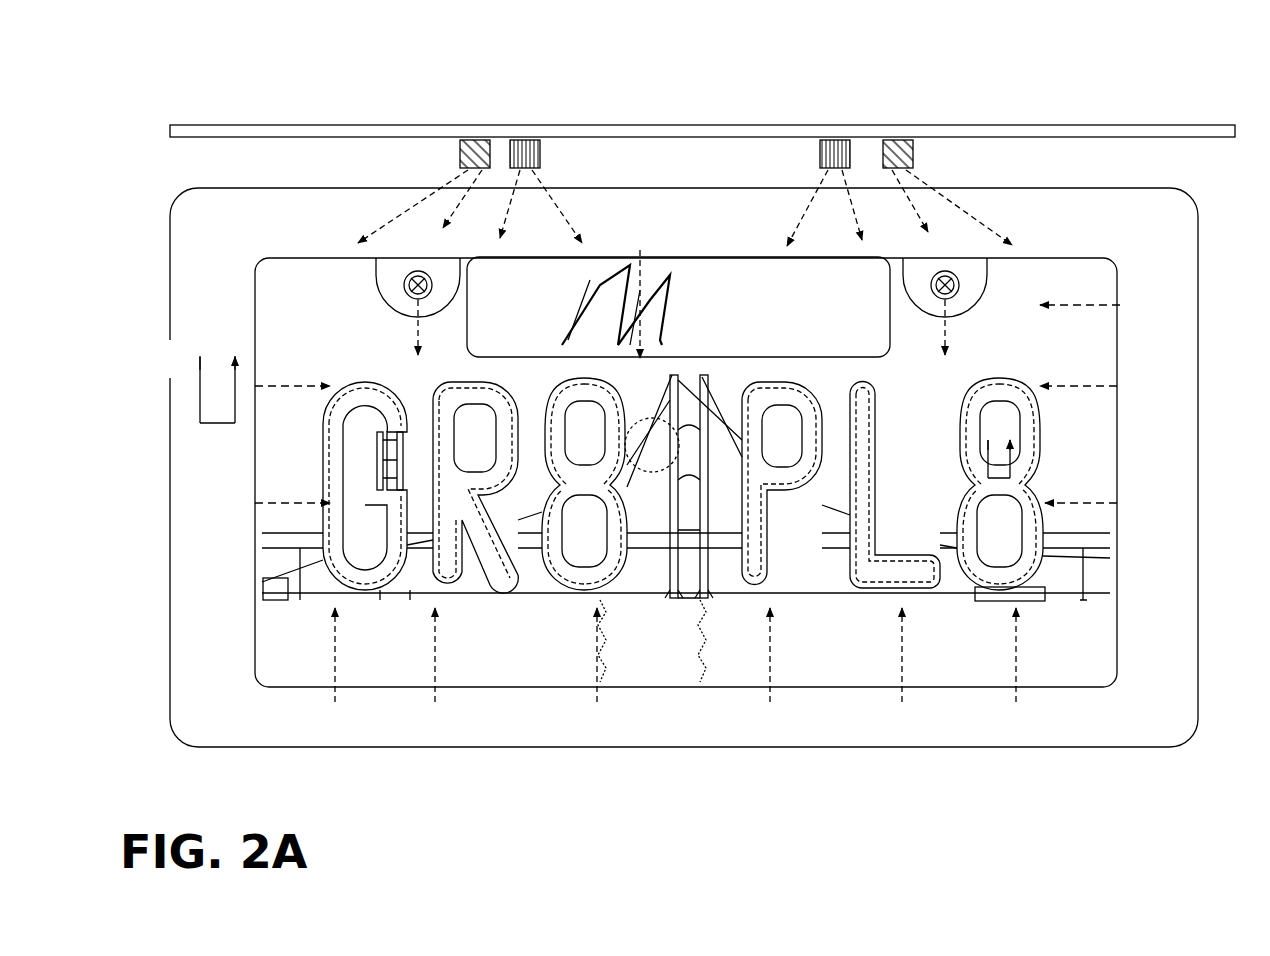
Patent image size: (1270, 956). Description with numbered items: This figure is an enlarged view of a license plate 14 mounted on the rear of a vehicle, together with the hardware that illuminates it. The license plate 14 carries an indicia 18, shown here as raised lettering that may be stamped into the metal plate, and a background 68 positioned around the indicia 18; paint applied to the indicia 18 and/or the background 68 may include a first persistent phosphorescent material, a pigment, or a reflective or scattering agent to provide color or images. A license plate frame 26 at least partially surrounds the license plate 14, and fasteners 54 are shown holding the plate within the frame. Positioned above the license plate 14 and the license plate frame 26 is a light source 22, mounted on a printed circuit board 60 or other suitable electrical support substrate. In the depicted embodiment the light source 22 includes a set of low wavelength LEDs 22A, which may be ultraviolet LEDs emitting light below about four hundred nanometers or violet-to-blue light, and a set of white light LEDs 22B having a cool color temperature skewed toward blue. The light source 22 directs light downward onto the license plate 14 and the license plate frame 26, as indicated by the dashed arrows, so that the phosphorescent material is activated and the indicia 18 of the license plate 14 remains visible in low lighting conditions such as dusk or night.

The license plate 14 is at (1120, 510).
The indicia 18 is at (1030, 418).
The light source 22 is at (678, 105).
The low wavelength LEDs 22A is at (526, 140).
The white light LEDs 22B is at (477, 140).
The license plate frame 26 is at (1155, 280).
The fastener 54 is at (418, 270).
The printed circuit board 60 is at (340, 130).
The background 68 is at (1070, 342).